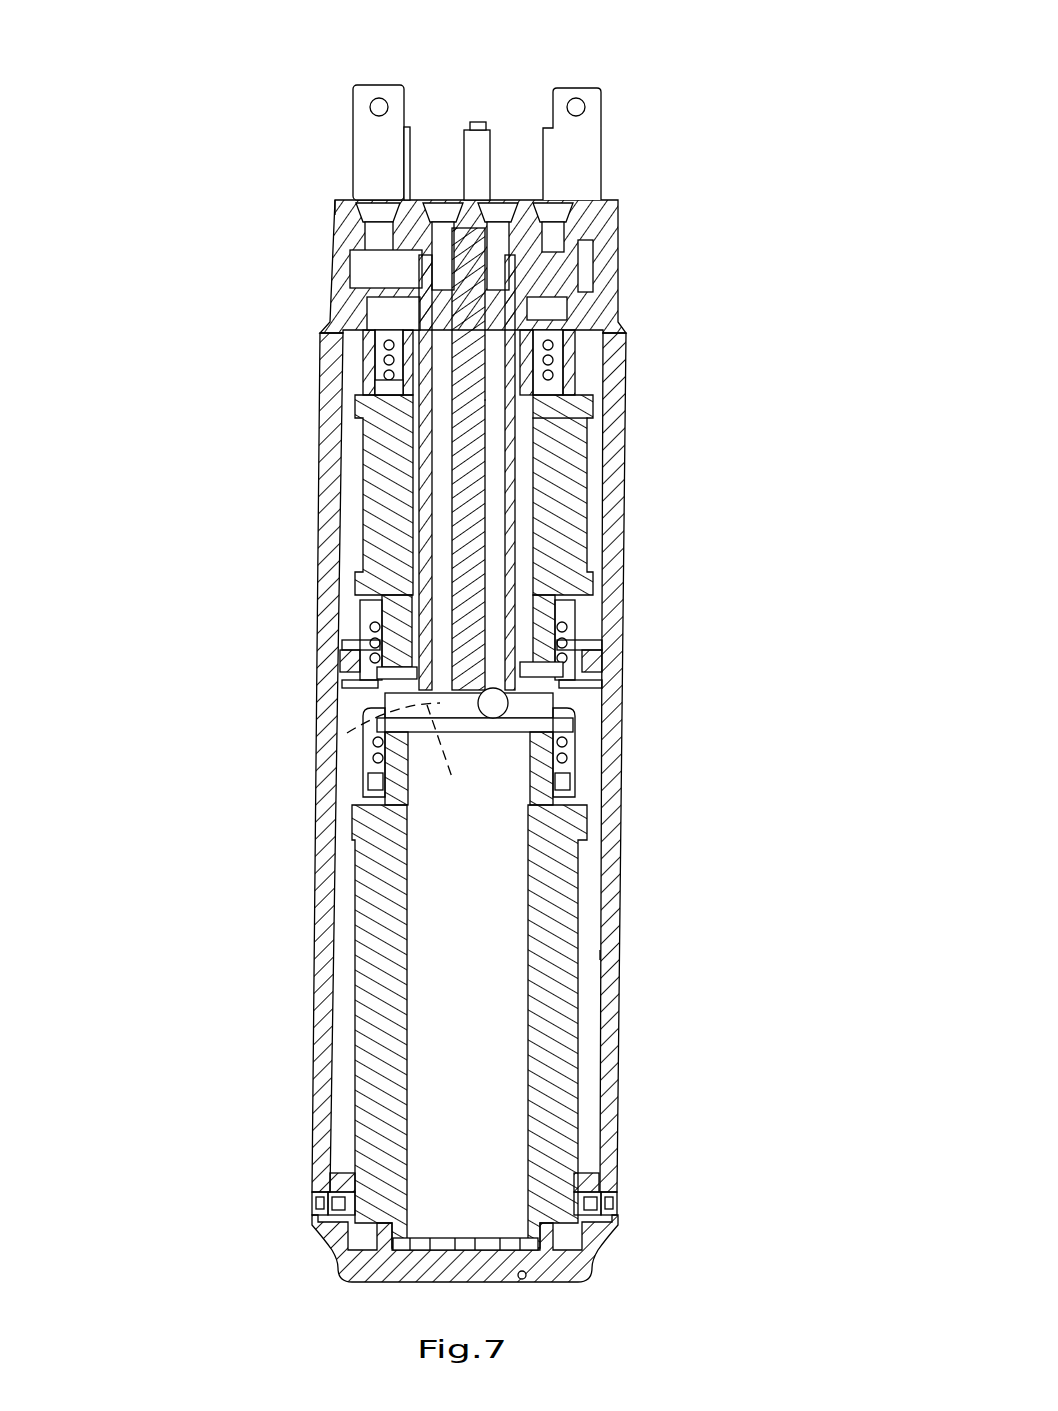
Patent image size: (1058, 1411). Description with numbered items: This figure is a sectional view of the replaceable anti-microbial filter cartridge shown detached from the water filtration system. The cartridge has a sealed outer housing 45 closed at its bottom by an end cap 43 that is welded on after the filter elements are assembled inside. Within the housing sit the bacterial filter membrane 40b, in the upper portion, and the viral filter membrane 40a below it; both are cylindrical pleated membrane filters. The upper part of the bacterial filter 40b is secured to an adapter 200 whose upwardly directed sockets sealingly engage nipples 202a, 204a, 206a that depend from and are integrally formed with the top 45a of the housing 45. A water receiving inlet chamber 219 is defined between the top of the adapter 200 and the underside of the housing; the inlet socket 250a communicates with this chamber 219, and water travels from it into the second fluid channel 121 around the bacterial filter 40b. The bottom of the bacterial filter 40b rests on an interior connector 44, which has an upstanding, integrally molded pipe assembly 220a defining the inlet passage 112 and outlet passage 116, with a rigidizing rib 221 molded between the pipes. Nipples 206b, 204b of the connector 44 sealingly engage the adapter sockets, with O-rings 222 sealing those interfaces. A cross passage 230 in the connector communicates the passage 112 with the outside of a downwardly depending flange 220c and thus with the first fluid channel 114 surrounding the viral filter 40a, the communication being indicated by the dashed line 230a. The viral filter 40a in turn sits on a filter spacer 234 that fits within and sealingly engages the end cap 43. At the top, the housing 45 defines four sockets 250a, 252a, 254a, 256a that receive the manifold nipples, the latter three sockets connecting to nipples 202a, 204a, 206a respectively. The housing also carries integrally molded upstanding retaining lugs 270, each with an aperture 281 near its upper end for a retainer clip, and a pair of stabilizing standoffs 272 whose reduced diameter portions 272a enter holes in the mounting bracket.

The viral filter membrane 40a is at (560, 1035).
The bacterial filter membrane 40b is at (560, 455).
The end cap 43 is at (595, 1265).
The interior connector 44 is at (595, 665).
The outer housing 45 is at (622, 881).
The top of the housing 45a is at (335, 210).
The first inlet conduit 112 is at (500, 555).
The first fluid channel 114 is at (590, 950).
The first outlet conduit 116 is at (443, 478).
The second fluid channel 121 is at (600, 483).
The adapter 200 is at (595, 316).
The nipple 202a is at (557, 255).
The nipple 204a is at (512, 270).
The nipple 204b is at (580, 350).
The nipple 206a is at (440, 258).
The nipple 206b is at (385, 378).
The inlet chamber 219 is at (370, 272).
The pipe assembly 220a is at (535, 443).
The flange 220c is at (570, 763).
The rigidizing rib 221 is at (472, 510).
The O-rings 222 is at (390, 350).
The cross passage 230 is at (505, 702).
The dashed line 230a is at (420, 760).
The filter spacer 234 is at (590, 1205).
The socket 250a is at (374, 192).
The socket 252a is at (563, 200).
The socket 254a is at (505, 205).
The socket 256a is at (443, 203).
The retaining lugs 270 is at (367, 138).
The stabilizing standoffs 272 is at (471, 152).
The reduced diameter portions 272a is at (482, 126).
The aperture 281 is at (379, 98).